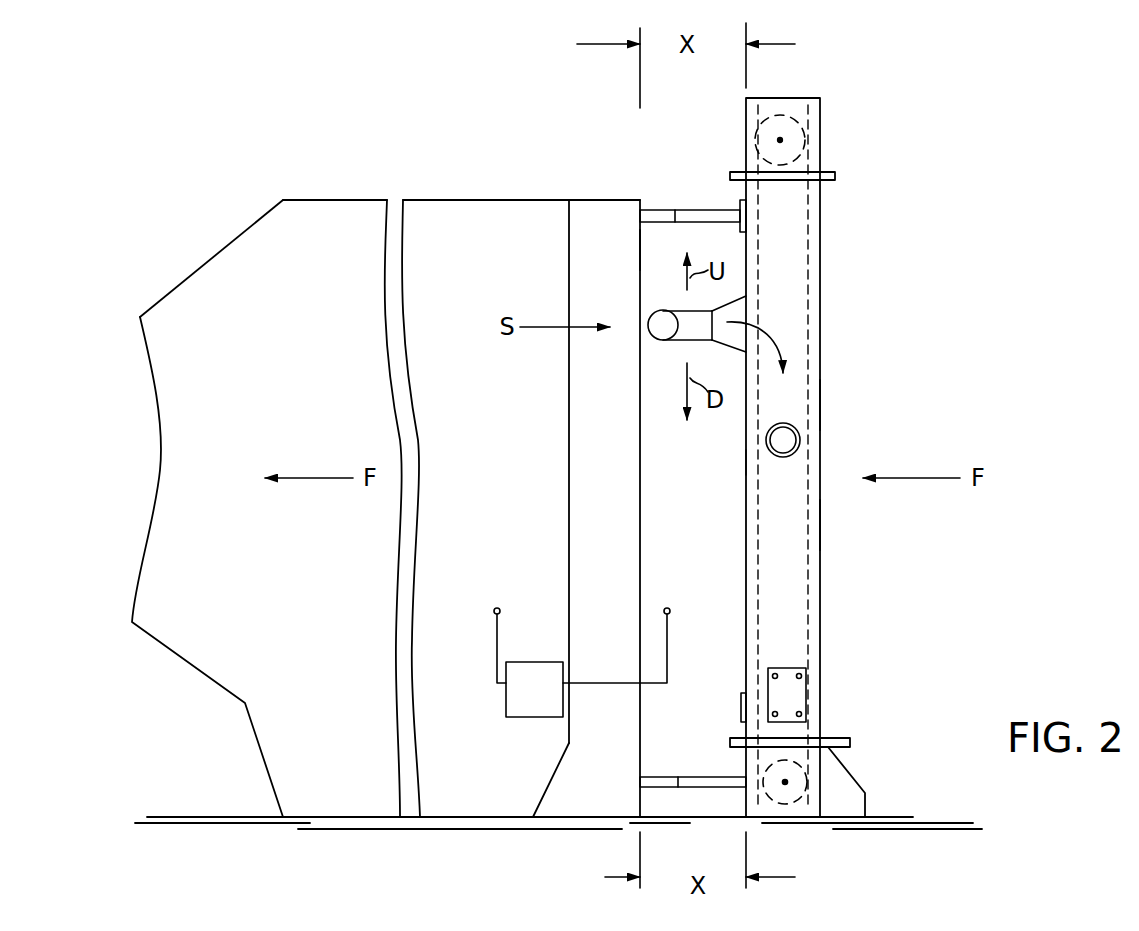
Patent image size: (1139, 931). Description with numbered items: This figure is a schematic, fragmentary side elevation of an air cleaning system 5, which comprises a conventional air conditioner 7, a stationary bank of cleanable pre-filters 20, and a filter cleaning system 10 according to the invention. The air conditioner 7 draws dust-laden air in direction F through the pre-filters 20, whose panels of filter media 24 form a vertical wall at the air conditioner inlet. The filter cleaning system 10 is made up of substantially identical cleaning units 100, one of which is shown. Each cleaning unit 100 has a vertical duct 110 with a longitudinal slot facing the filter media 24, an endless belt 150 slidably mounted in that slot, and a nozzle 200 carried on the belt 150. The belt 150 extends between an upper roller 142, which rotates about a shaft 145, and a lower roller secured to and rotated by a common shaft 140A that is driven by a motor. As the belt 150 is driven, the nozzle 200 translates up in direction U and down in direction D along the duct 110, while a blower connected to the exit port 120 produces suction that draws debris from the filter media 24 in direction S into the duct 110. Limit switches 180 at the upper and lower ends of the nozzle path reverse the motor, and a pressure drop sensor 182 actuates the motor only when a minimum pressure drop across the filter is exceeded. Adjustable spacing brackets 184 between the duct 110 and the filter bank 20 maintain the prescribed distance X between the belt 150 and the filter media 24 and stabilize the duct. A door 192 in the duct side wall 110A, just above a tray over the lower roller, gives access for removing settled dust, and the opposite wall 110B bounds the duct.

The air cleaning system 5 is at (428, 127).
The air conditioner 7 is at (294, 357).
The filter cleaning system 10 is at (847, 243).
The bank of cleanable pre-filters 20 is at (585, 172).
The filter media 24 is at (641, 255).
The cleaning unit 100 is at (833, 317).
The vertical duct 110 is at (822, 362).
The duct wall 110A is at (795, 522).
The upper column portion 110B is at (822, 412).
The exit port 120 is at (800, 448).
The common shaft 140A is at (803, 797).
The upper roller 142 is at (792, 123).
The shaft 145 is at (782, 140).
The belt 150 is at (758, 457).
The limit switch 180 is at (740, 205).
The pressure drop sensor 182 is at (515, 704).
The adjustable spacing bracket 184 is at (650, 210).
The door 192 is at (797, 695).
The nozzle 200 is at (668, 358).